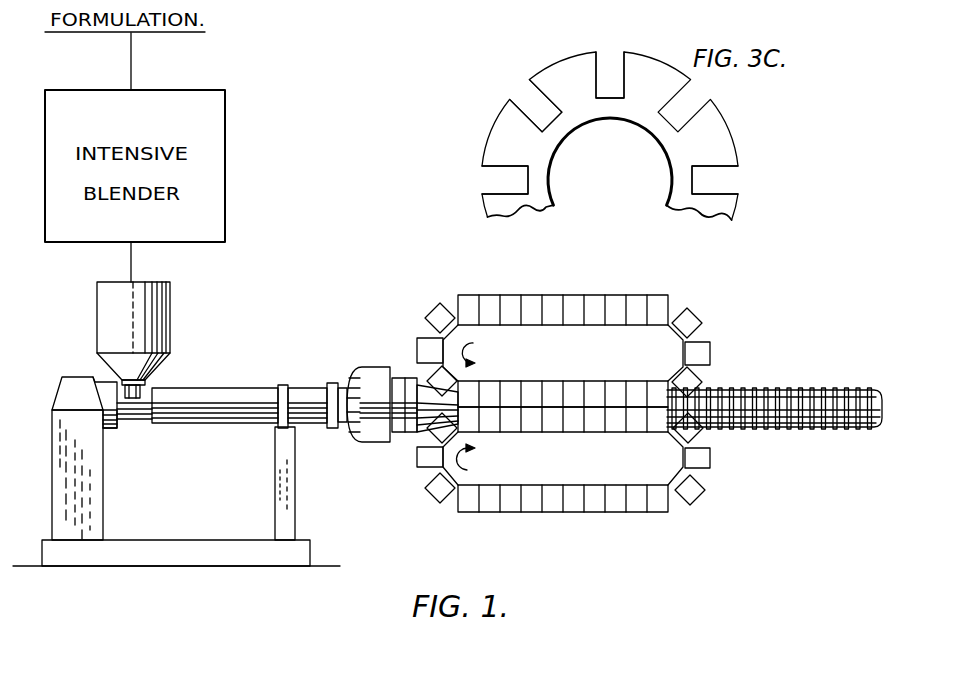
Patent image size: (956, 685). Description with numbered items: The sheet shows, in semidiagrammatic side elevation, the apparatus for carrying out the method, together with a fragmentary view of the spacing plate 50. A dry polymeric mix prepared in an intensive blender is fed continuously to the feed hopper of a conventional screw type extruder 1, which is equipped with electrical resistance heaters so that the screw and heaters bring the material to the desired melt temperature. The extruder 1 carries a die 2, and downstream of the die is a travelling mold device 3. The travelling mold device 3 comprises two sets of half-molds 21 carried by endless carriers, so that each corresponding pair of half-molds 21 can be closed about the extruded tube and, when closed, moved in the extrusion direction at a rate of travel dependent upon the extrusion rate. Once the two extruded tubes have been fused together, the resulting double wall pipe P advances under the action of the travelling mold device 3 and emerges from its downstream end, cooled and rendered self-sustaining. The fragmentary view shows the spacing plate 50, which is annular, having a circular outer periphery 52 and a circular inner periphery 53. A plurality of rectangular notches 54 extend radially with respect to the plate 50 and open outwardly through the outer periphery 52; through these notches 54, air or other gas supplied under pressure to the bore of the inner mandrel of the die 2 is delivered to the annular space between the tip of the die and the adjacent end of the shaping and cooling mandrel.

In FIG. 1, the screw type extruder 1 is at (231, 382).
In FIG. 1, the die 2 is at (404, 442).
In FIG. 1, the travelling mold device 3 is at (447, 288).
In FIG. 1, the half-molds 21 is at (445, 495).
In FIG. 1, the double wall pipe P is at (752, 390).
In FIG. 3C, the spacing plate 50 is at (627, 119).
In FIG. 3C, the outer periphery 52 is at (555, 60).
In FIG. 3C, the inner periphery 53 is at (642, 132).
In FIG. 3C, the rectangular notches 54 is at (522, 97).